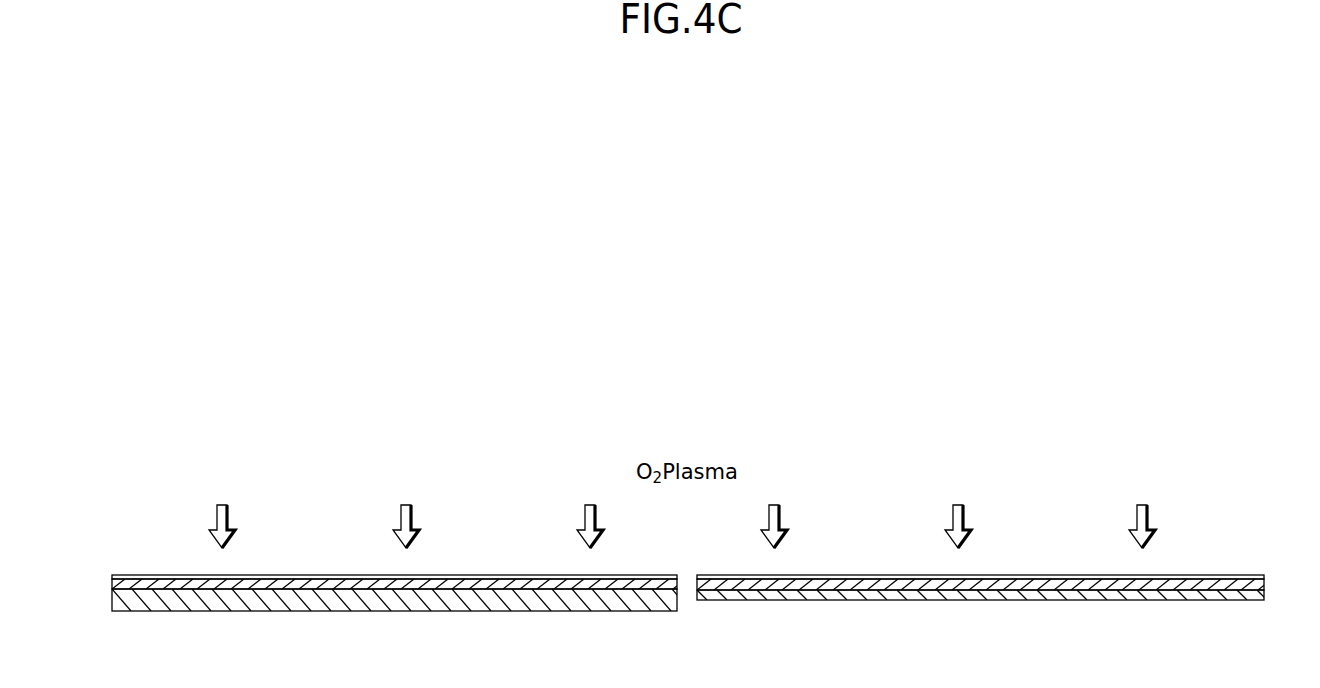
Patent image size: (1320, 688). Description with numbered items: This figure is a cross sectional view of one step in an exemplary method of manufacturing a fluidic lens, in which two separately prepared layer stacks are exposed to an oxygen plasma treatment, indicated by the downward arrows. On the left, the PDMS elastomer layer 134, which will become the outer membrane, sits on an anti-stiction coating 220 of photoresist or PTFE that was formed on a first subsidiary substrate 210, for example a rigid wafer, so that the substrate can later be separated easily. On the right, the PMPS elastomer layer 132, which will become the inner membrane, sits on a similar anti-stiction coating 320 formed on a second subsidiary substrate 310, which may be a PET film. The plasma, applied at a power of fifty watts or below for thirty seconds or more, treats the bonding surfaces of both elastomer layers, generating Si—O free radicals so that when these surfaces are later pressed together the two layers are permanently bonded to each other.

The PDMS elastomer layer 134 is at (112, 576).
The anti-stiction coating 220 is at (112, 585).
The first subsidiary substrate 210 is at (113, 600).
The PMPS elastomer layer 132 is at (1264, 576).
The anti-stiction coating 320 is at (1264, 581).
The second subsidiary substrate 310 is at (1264, 594).